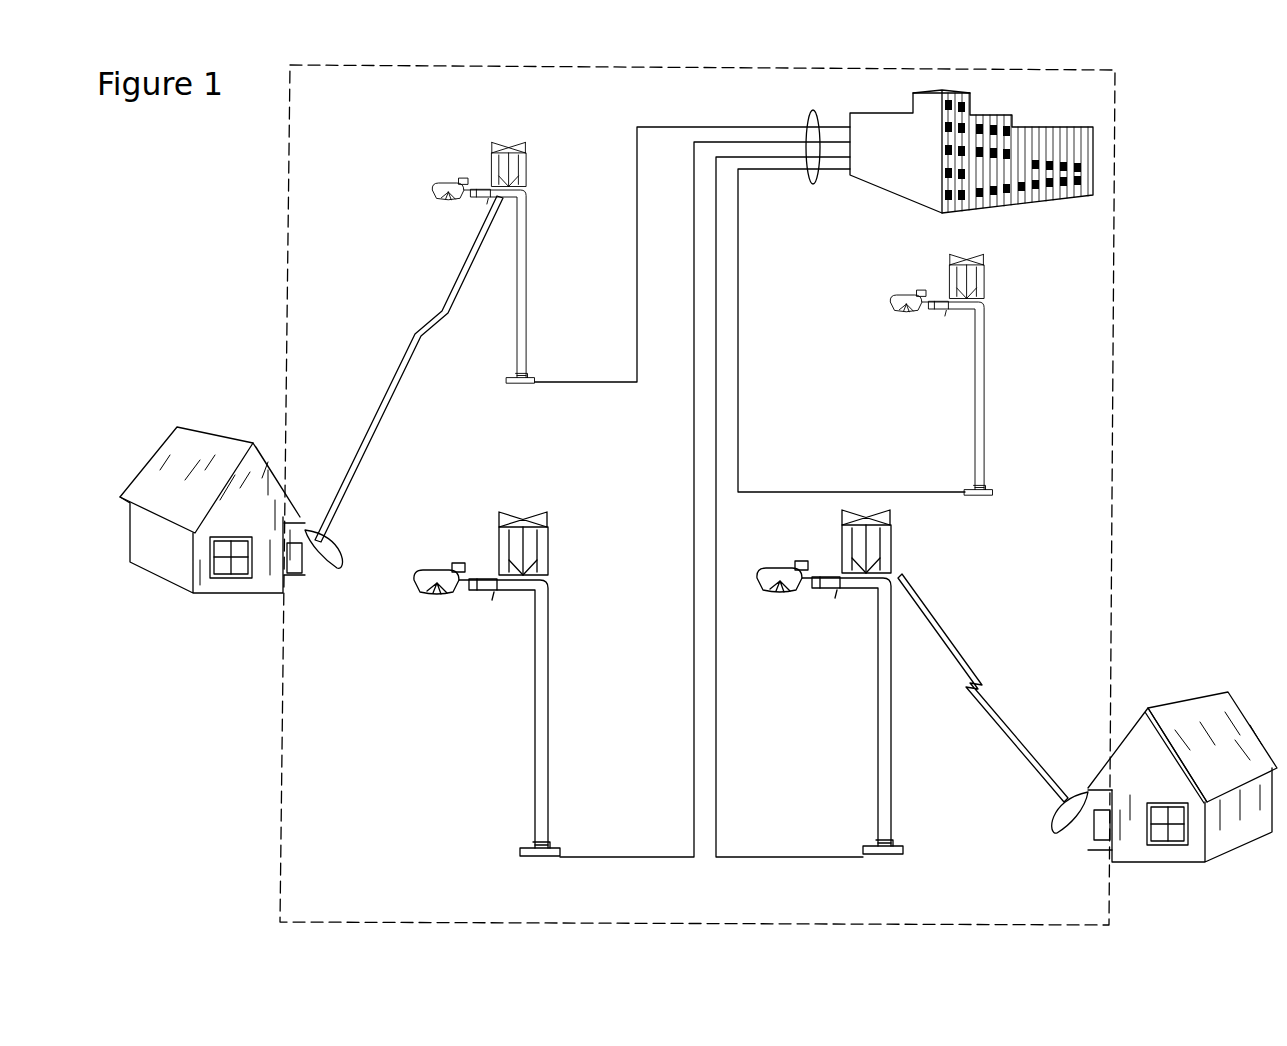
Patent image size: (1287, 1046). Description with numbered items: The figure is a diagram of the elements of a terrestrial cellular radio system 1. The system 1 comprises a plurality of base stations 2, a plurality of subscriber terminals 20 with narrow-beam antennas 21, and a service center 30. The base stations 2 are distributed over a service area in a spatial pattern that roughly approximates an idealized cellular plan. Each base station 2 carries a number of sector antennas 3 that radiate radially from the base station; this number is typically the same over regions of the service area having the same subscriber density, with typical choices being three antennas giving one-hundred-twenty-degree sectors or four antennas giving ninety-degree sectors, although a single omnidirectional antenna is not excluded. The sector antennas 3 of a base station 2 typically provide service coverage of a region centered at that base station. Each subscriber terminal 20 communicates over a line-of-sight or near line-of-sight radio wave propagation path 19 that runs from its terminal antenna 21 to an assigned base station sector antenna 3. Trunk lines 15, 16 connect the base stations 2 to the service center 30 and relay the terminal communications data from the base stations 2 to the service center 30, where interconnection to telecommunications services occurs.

The terrestrial cellular radio system 1 is at (1120, 427).
The base station 2 is at (730, 505).
The sector antenna 3 is at (497, 150).
The trunk line 15 is at (797, 109).
The trunk line 16 is at (813, 147).
The radio wave propagation path 19 is at (413, 358).
The subscriber terminal 20 is at (298, 590).
The narrow-beam antenna 21 is at (319, 522).
The service center 30 is at (902, 104).